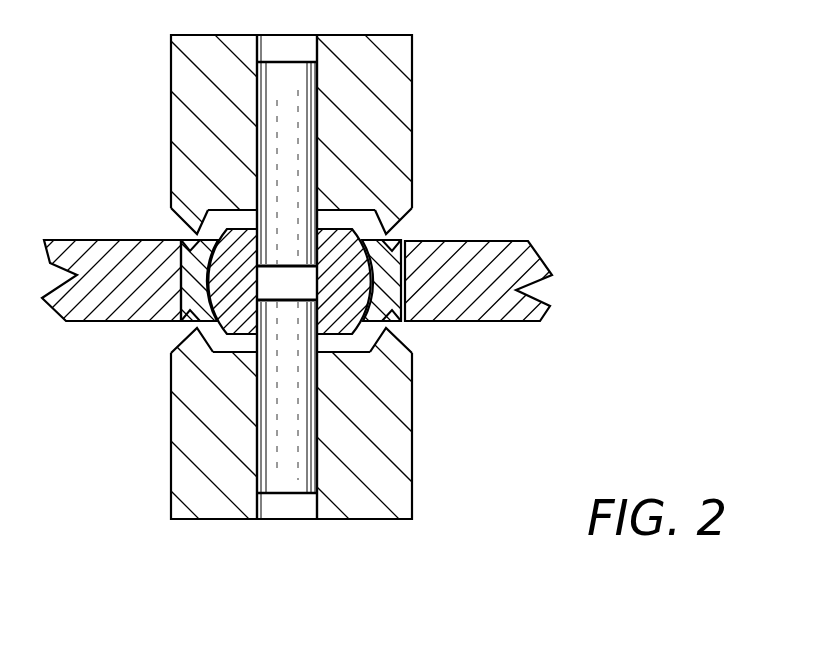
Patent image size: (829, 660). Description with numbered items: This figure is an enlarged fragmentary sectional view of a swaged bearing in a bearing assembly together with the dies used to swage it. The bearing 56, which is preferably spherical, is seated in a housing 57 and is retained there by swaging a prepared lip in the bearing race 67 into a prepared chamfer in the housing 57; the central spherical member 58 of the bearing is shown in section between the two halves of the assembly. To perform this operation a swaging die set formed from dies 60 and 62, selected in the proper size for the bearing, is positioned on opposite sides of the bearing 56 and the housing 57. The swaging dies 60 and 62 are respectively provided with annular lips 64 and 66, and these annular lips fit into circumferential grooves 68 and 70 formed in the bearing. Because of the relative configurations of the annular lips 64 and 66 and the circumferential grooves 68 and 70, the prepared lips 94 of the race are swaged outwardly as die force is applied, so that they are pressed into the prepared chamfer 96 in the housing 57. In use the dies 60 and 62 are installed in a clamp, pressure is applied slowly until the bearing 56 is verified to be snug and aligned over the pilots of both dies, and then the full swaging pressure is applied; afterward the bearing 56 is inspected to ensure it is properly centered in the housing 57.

The bearing 56 is at (423, 223).
The housing 57 is at (528, 250).
The spherical bearing member 58 is at (362, 285).
The swaging die 60 is at (414, 330).
The swaging die 62 is at (414, 330).
The annular lip 64 is at (182, 228).
The annular lip 66 is at (178, 347).
The bearing race 67 is at (414, 330).
The circumferential groove 68 is at (400, 213).
The circumferential groove 70 is at (387, 337).
The prepared lips 94 is at (180, 330).
The prepared chamfer 96 is at (458, 245).